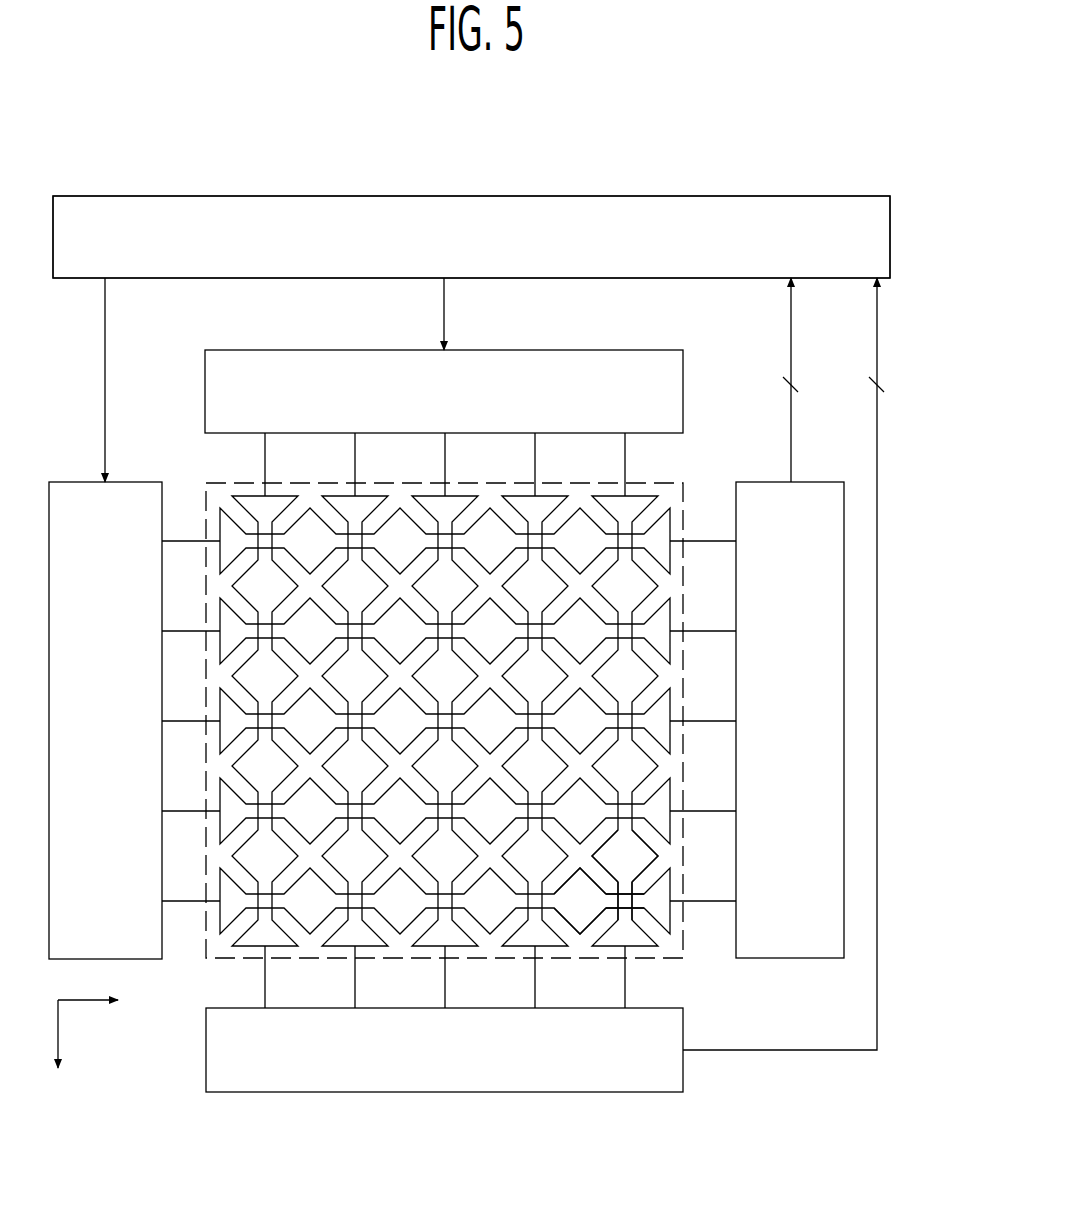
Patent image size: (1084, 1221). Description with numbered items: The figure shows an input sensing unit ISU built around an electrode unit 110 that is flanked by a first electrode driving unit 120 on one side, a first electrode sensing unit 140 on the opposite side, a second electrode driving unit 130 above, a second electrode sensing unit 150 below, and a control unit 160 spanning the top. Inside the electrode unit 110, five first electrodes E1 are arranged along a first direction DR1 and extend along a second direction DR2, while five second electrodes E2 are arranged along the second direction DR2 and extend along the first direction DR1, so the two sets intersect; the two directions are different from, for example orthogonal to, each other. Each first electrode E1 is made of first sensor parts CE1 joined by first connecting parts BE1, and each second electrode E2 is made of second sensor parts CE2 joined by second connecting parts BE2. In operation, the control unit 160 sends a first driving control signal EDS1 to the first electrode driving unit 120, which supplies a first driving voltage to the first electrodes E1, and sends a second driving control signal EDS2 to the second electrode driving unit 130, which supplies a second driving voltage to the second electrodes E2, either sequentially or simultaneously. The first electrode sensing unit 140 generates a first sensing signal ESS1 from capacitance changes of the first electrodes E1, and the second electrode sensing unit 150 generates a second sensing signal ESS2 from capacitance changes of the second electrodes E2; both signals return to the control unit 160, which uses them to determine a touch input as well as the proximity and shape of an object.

The electrode unit 110 is at (683, 958).
The first electrode driving unit 120 is at (133, 482).
The second electrode driving unit 130 is at (667, 350).
The first electrode sensing unit 140 is at (822, 482).
The second electrode sensing unit 150 is at (683, 1074).
The control unit 160 is at (832, 196).
The input sensing unit ISU is at (905, 145).
The first electrodes E1 is at (220, 522).
The second electrodes E2 is at (283, 495).
The first sensor parts CE1 is at (578, 903).
The first connecting parts BE1 is at (614, 903).
The second sensor parts CE2 is at (627, 853).
The second connecting parts BE2 is at (628, 889).
The first driving control signal EDS1 is at (81, 380).
The second driving control signal EDS2 is at (419, 314).
The first sensing signal ESS1 is at (771, 380).
The second sensing signal ESS2 is at (783, 664).
The first direction DR1 is at (59, 1052).
The second direction DR2 is at (108, 1001).